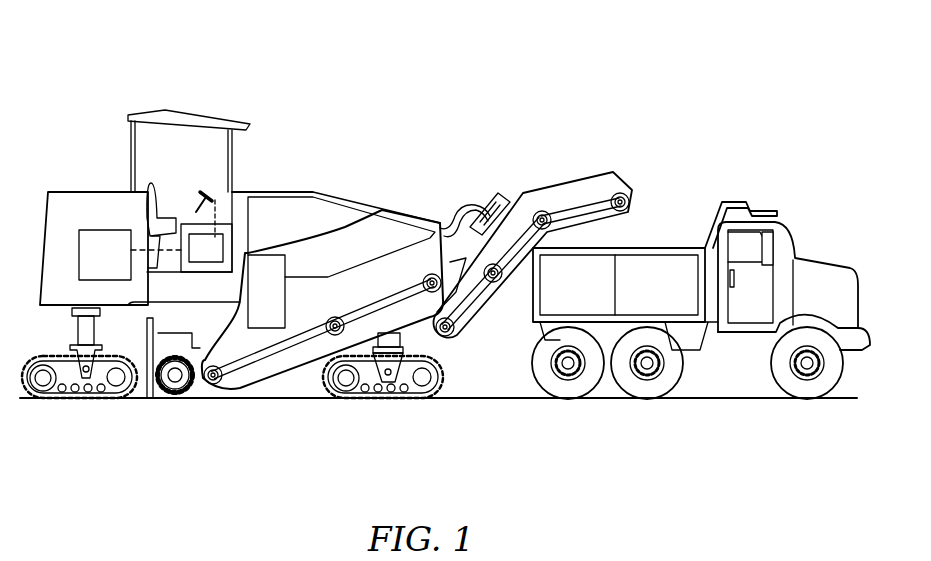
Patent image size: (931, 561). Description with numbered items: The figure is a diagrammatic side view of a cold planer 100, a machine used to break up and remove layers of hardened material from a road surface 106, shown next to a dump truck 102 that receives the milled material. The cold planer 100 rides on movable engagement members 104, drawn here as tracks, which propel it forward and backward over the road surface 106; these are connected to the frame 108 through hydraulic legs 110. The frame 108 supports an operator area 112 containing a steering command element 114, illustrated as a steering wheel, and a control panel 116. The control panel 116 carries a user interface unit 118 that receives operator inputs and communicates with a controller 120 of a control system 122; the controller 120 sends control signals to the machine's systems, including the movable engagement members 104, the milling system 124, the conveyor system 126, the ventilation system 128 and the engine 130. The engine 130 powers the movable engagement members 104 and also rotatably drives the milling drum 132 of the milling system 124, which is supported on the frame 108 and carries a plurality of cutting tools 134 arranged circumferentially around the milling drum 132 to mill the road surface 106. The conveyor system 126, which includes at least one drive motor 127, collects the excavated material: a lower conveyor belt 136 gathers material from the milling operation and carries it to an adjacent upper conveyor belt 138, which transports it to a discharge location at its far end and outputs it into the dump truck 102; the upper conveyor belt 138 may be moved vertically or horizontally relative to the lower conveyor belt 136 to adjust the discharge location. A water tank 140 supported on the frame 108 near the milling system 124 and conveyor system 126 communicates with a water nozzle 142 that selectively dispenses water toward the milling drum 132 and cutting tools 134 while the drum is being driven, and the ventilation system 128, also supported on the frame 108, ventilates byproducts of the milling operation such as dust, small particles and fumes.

The cold planer 100 is at (440, 45).
The dump truck 102 is at (802, 210).
The movable engagement members 104 is at (23, 399).
The road surface 106 is at (519, 397).
The frame 108 is at (68, 191).
The hydraulic legs 110 is at (77, 332).
The operator area 112 is at (193, 106).
The steering command element 114 is at (194, 203).
The control panel 116 is at (209, 183).
The user interface unit 118 is at (230, 226).
The controller 120 is at (206, 248).
The control system 122 is at (246, 253).
The milling system 124 is at (180, 400).
The conveyor system 126 is at (465, 353).
The drive motor 127 is at (334, 336).
The ventilation system 128 is at (352, 234).
The engine 130 is at (97, 229).
The milling drum 132 is at (187, 387).
The cutting tools 134 is at (163, 381).
The lower conveyor belt 136 is at (250, 390).
The upper conveyor belt 138 is at (594, 199).
The water tank 140 is at (327, 191).
The water nozzle 142 is at (237, 310).